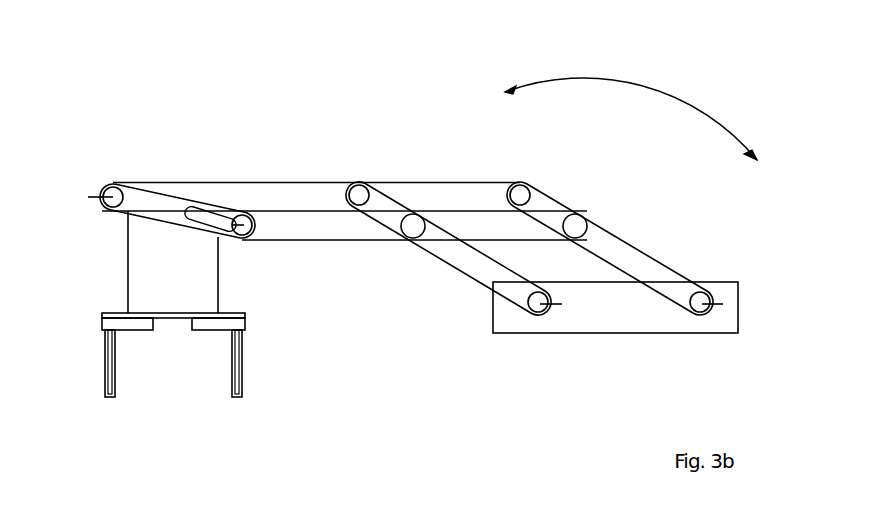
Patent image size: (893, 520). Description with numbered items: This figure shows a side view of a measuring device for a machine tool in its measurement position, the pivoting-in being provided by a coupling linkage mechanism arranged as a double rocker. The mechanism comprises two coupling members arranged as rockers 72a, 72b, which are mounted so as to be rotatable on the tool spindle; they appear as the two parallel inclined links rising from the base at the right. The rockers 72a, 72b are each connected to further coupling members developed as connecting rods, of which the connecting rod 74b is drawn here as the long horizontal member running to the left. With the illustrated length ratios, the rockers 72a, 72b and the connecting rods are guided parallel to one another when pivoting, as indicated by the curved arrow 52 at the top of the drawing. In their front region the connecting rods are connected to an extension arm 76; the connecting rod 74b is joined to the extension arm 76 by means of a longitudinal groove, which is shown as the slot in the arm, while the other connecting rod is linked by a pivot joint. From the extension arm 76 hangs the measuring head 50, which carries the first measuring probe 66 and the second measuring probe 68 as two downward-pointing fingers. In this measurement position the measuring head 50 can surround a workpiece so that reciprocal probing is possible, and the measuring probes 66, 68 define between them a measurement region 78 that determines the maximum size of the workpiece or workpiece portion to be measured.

The measuring head 50 is at (142, 268).
The arrow 52 is at (615, 80).
The first measuring probe 66 is at (105, 395).
The second measuring probe 68 is at (233, 395).
The coupling member (rocker) 72a is at (468, 260).
The coupling member (rocker) 72b is at (608, 240).
The connecting rod 74b is at (227, 192).
The extension arm 76 is at (143, 200).
The measurement region 78 is at (152, 390).